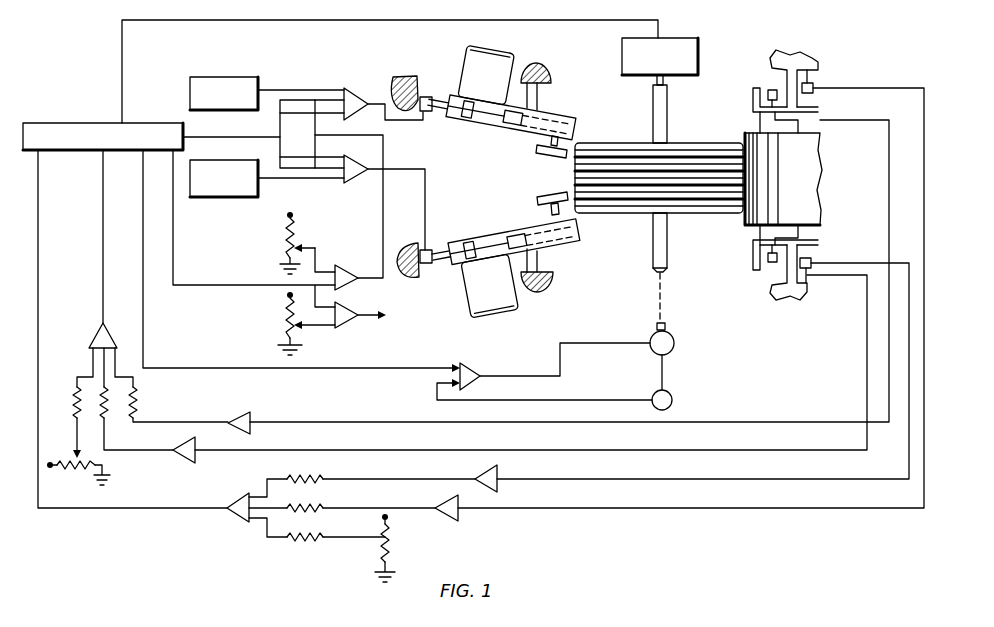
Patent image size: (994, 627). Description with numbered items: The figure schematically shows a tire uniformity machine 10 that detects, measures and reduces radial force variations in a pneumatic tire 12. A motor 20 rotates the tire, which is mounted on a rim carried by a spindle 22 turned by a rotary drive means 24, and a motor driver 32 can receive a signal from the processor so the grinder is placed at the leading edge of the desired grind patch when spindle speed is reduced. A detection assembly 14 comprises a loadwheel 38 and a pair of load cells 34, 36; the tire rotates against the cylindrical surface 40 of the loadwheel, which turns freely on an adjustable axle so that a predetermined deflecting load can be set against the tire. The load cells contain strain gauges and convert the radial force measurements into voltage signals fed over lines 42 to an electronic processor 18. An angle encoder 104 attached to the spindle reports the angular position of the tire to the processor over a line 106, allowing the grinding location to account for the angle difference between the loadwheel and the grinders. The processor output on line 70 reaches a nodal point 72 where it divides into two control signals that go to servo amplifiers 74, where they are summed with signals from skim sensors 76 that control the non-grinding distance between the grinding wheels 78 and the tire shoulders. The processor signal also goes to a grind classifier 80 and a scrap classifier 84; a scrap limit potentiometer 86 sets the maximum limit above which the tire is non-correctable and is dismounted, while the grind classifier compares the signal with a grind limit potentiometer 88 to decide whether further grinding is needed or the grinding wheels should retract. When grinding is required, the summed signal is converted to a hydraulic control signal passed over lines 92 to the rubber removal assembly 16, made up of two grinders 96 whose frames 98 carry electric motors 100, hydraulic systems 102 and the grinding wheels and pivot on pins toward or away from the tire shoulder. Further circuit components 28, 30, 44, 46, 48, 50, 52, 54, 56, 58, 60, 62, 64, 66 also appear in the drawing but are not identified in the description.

The tire uniformity machine 10 is at (738, 48).
The pneumatic tire 12 is at (683, 142).
The detection assembly 14 is at (745, 135).
The rubber removal assembly 16 is at (497, 181).
The electronic processor 18 is at (80, 123).
The motor 20 is at (662, 341).
The spindle 22 is at (653, 123).
The rotary drive means 24 is at (675, 345).
The pickup 28 is at (666, 327).
The reference generator 30 is at (673, 400).
The motor driver 32 is at (496, 348).
The load cell 34 is at (768, 92).
The load cell 36 is at (813, 85).
The loadwheel 38 is at (753, 232).
The cylindrical surface 40 is at (745, 220).
The lines 42 is at (771, 423).
The inverting amplifier 44 is at (245, 418).
The resistor 46 is at (133, 404).
The amplifier 48 is at (98, 327).
The potentiometer 50 is at (84, 470).
The resistor 52 is at (75, 390).
The control line 54 is at (103, 250).
The feedback line 56 is at (709, 480).
The amplifier 58 is at (500, 488).
The resistor 60 is at (305, 472).
The summing amplifier 62 is at (232, 520).
The resistor 64 is at (392, 543).
The resistor 66 is at (305, 545).
The line 70 is at (230, 137).
The nodal point 72 is at (282, 136).
The servo amplifiers 74 is at (368, 58).
The skim sensors 76 is at (212, 77).
The grinding wheels 78 is at (565, 162).
The grind classifier 80 is at (360, 245).
The scrap classifier 84 is at (340, 328).
The scrap limit potentiometer 86 is at (284, 325).
The grind limit potentiometer 88 is at (285, 250).
The lines 92 is at (403, 120).
The grinders 96 is at (470, 118).
The frames 98 is at (548, 112).
The electric motors 100 is at (462, 58).
The hydraulic systems 102 is at (458, 270).
The angle encoder 104 is at (684, 38).
The line 106 is at (122, 76).